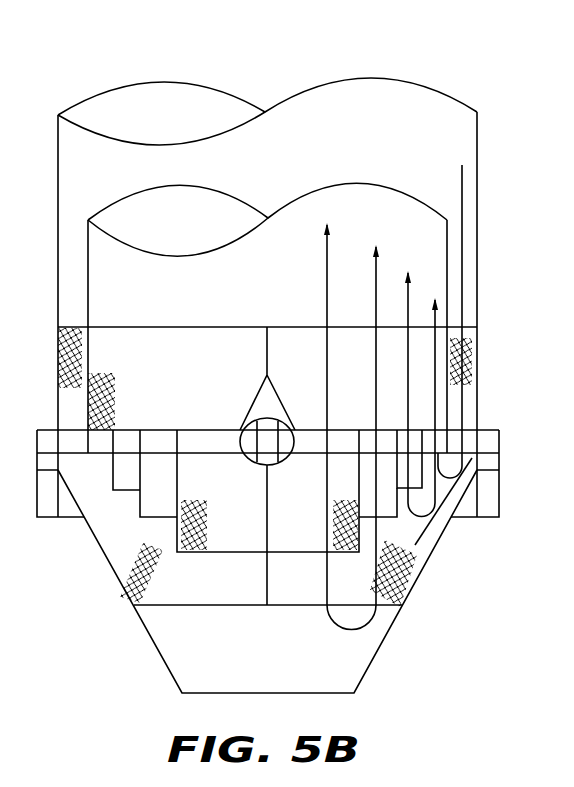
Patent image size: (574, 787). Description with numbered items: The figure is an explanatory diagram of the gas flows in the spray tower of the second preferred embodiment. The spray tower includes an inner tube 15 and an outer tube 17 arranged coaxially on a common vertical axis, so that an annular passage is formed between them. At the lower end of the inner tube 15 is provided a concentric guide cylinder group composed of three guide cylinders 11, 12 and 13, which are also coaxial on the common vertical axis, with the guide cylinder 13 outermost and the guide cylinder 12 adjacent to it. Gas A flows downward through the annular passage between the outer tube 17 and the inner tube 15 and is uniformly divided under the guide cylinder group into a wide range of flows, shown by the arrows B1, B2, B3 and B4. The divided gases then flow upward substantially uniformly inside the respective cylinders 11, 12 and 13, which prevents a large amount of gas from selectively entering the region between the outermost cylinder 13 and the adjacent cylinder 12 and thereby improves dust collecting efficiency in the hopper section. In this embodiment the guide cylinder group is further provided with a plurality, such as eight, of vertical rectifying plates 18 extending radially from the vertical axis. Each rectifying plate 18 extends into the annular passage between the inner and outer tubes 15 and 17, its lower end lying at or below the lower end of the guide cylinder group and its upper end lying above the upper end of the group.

The guide cylinder 11 is at (252, 532).
The guide cylinder 12 is at (152, 517).
The guide cylinder 13 is at (125, 483).
The inner tube 15 is at (95, 212).
The outer tube 17 is at (82, 100).
The rectifying plate 18 is at (212, 597).
The gas A is at (452, 306).
The arrow B1 is at (427, 392).
The arrow B2 is at (405, 370).
The arrow B3 is at (357, 422).
The arrow B4 is at (324, 399).